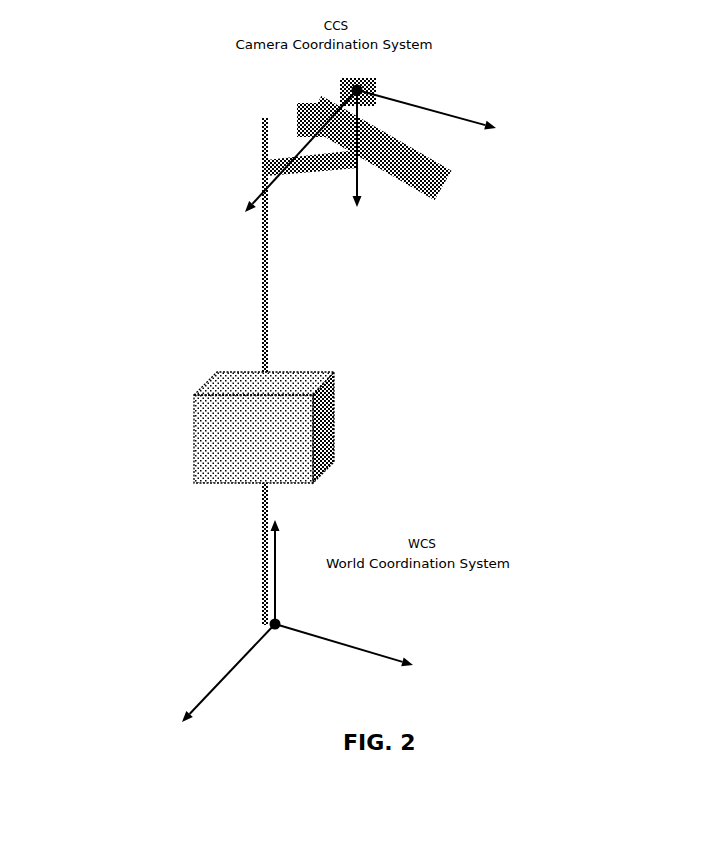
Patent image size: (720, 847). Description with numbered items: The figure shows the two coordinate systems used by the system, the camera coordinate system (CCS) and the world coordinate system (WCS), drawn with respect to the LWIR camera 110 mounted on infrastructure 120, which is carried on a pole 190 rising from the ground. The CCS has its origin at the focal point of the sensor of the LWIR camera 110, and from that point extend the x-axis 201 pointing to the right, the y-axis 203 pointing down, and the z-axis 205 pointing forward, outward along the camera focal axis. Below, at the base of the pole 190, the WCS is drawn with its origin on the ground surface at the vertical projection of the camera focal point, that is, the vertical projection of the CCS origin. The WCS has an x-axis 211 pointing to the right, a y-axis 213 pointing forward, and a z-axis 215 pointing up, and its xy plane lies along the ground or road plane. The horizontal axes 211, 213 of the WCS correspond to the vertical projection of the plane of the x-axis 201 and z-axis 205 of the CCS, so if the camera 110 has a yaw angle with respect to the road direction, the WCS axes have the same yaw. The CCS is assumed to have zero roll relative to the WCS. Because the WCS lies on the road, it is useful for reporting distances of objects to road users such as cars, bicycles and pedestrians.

The LWIR camera 110 is at (360, 85).
The infrastructure 120 is at (367, 152).
The pole 190 is at (265, 288).
The x-axis of the camera coordinate system 201 is at (302, 143).
The y-axis of the camera coordinate system 203 is at (350, 201).
The z-axis of the camera coordinate system 205 is at (500, 127).
The x-axis of the world coordinate system 211 is at (240, 657).
The y-axis of the world coordinate system 213 is at (385, 653).
The z-axis of the world coordinate system 215 is at (275, 578).